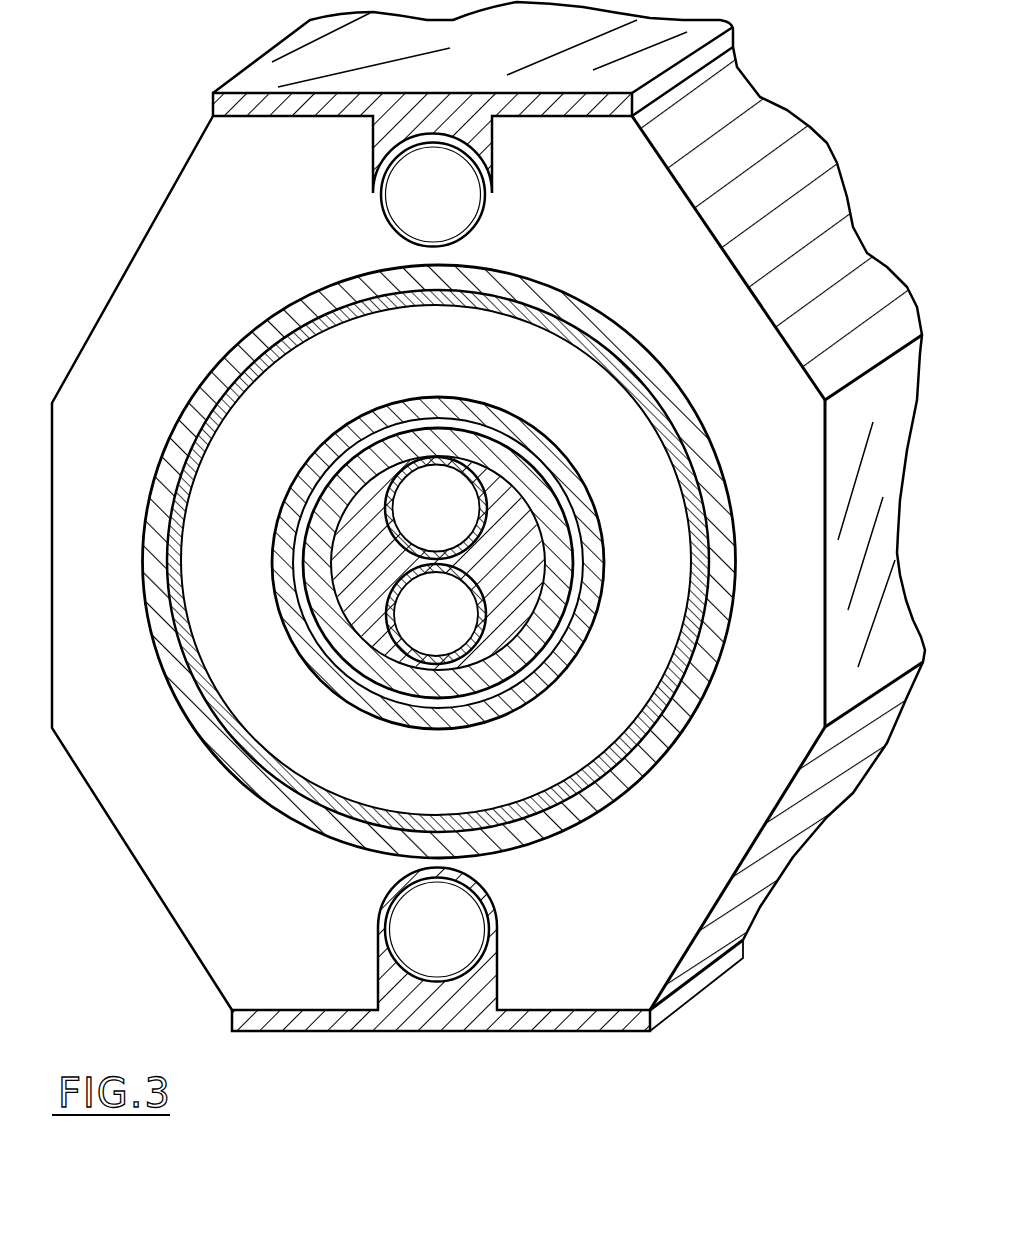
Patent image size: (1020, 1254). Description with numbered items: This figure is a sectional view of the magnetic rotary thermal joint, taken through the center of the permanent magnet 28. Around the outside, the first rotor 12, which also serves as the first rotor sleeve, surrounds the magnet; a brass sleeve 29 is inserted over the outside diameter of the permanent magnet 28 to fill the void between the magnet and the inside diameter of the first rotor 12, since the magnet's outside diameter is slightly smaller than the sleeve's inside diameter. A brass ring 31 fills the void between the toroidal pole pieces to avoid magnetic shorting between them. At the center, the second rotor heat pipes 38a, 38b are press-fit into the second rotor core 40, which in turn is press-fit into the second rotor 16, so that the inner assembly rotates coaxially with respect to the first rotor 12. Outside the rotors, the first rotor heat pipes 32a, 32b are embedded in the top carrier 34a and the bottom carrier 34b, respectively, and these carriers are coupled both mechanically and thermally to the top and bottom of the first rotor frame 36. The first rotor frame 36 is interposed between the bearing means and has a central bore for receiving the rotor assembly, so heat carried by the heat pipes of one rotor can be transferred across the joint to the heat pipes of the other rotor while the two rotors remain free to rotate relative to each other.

The first rotor 12 is at (693, 680).
The second rotor 16 is at (310, 555).
The permanent magnet 28 is at (466, 343).
The brass sleeve 29 is at (602, 346).
The brass ring 31 is at (590, 594).
The first rotor heat pipe 32a is at (492, 178).
The first rotor heat pipe 32b is at (488, 903).
The top carrier 34a is at (605, 153).
The bottom carrier 34b is at (570, 980).
The first rotor frame 36 is at (187, 779).
The second rotor heat pipe 38a is at (473, 510).
The second rotor heat pipe 38b is at (473, 614).
The second rotor core 40 is at (513, 537).